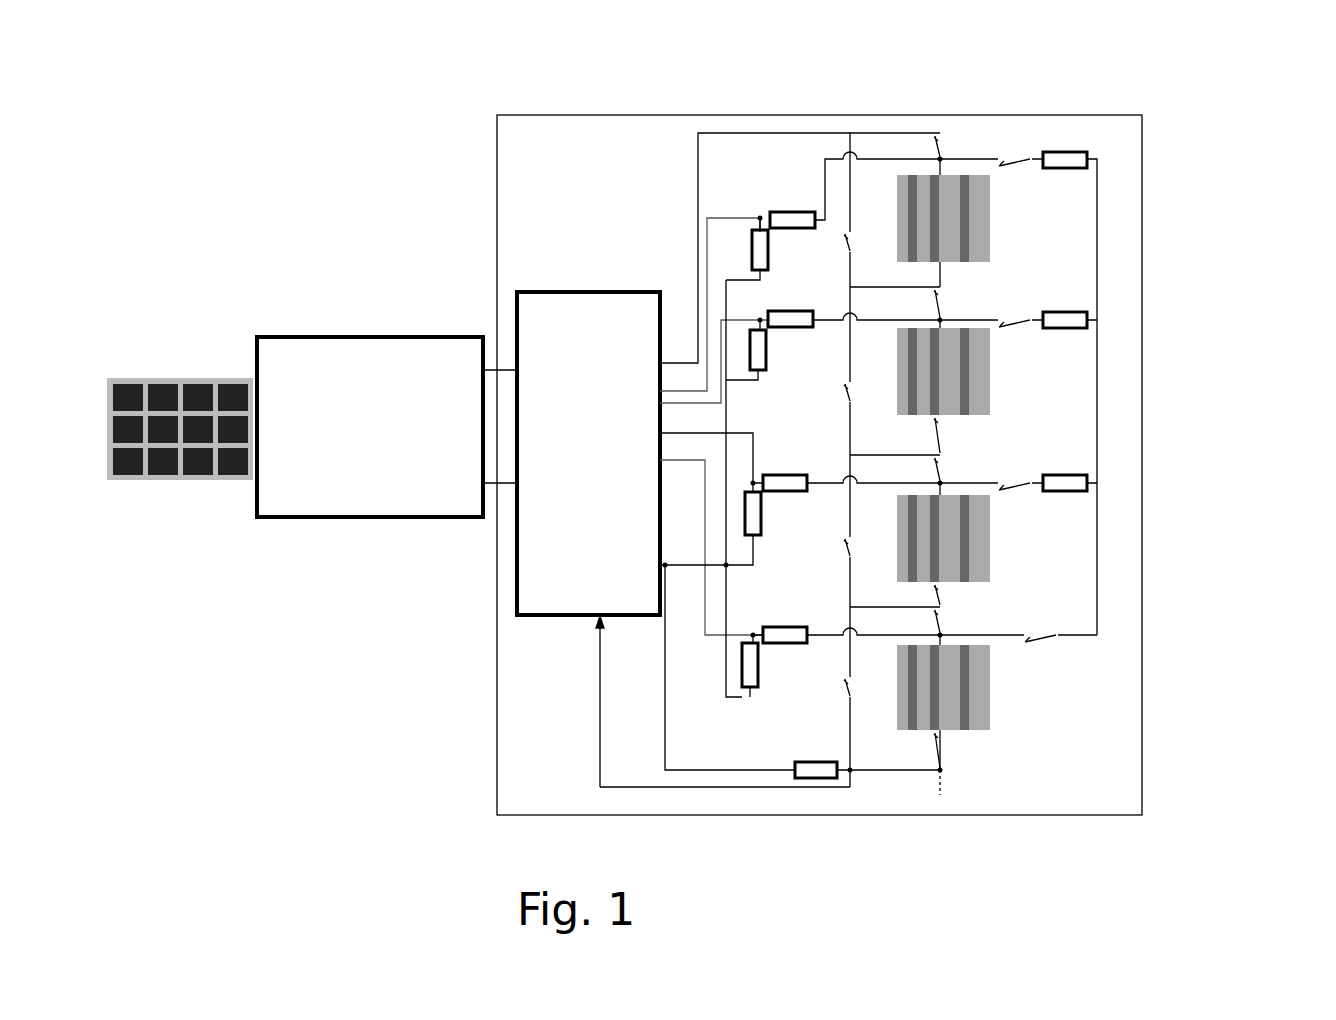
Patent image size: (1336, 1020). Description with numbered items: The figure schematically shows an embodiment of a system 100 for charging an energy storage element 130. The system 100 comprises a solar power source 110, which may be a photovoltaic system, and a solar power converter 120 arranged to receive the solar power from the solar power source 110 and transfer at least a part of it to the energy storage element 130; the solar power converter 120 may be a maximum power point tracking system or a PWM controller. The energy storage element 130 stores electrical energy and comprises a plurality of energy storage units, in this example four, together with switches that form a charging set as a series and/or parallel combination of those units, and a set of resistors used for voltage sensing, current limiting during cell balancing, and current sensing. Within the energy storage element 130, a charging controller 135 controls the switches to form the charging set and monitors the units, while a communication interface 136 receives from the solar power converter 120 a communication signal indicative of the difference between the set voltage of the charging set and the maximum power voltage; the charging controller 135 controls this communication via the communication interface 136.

The system 100 is at (707, 414).
The solar power source 110 is at (150, 373).
The solar power converter 120 is at (297, 337).
The energy storage element 130 is at (665, 115).
The charging controller 135 is at (558, 292).
The communication interface 136 is at (500, 353).